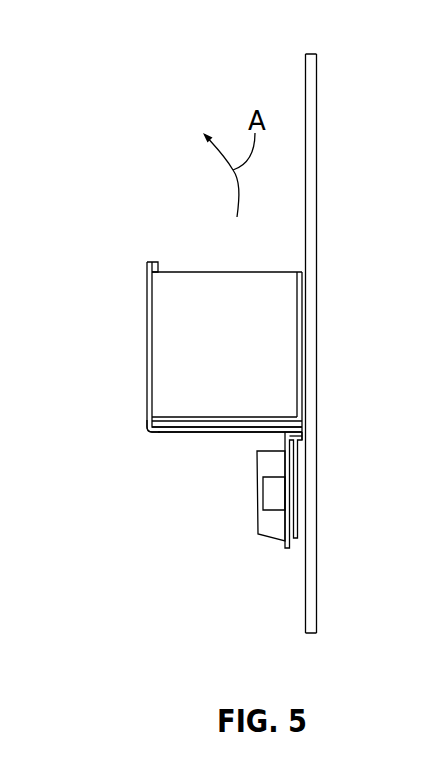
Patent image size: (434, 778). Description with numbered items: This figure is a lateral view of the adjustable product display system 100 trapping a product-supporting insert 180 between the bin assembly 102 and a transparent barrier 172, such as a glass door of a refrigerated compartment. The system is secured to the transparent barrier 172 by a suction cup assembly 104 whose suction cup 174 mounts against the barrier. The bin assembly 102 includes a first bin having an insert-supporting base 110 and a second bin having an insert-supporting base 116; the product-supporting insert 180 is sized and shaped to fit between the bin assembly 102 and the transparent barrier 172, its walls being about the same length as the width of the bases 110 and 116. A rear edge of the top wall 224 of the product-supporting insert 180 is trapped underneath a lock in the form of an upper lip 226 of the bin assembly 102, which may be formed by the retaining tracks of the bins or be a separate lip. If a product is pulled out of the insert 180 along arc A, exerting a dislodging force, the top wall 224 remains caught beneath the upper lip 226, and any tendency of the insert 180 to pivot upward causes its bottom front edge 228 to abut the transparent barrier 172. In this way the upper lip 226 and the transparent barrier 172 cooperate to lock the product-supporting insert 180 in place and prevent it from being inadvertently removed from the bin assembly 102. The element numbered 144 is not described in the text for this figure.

The adjustable product display system 100 is at (138, 310).
The bin assembly 102 is at (146, 402).
The suction cup assembly 104 is at (231, 539).
The insert-supporting base 110 is at (150, 435).
The insert-supporting base 116 is at (272, 419).
The mounting plate 144 is at (283, 472).
The transparent barrier 172 is at (317, 177).
The suction cup 174 is at (243, 505).
The product-supporting insert 180 is at (225, 308).
The top wall 224 is at (173, 271).
The upper lip 226 is at (153, 262).
The bottom front edge 228 is at (290, 411).